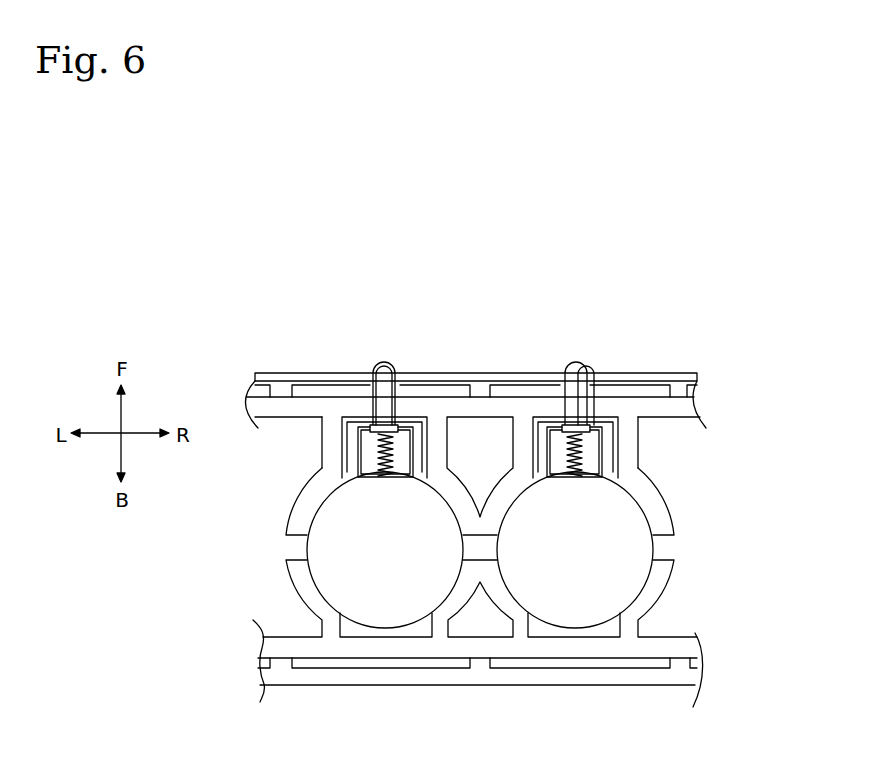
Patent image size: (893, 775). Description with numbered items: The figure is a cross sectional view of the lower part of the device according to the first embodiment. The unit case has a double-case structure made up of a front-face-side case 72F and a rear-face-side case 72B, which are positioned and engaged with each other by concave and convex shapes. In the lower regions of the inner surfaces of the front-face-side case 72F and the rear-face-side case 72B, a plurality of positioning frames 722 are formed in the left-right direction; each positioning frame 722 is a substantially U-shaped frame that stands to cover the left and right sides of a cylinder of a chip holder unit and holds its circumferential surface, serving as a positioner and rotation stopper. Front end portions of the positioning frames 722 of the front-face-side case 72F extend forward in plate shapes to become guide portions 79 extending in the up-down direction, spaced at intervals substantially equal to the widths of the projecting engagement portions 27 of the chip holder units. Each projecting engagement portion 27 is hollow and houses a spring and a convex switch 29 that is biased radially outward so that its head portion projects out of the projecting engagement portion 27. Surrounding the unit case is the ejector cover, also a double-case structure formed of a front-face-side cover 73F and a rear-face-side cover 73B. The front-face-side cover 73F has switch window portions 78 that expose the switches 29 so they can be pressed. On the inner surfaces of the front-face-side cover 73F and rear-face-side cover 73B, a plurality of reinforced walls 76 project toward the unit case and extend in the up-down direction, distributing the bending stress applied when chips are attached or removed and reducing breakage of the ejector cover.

The projecting engagement portion 27 is at (350, 463).
The switch 29 is at (385, 375).
The rear-face-side case 72B is at (690, 650).
The front-face-side case 72F is at (690, 403).
The positioning frame 722 is at (668, 522).
The rear-face-side cover 73B is at (608, 677).
The front-face-side cover 73F is at (697, 377).
The reinforced wall 76 is at (282, 388).
The switch window portion 78 is at (394, 368).
The guide portion 79 is at (330, 435).